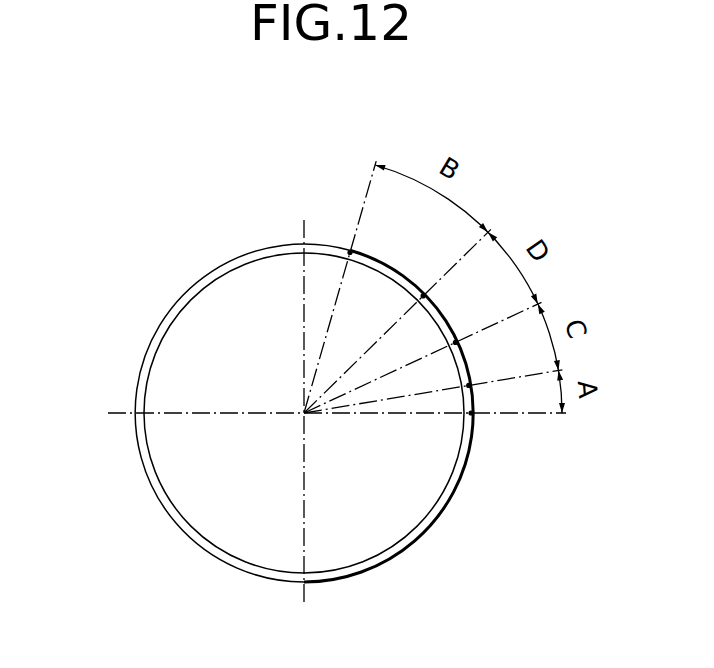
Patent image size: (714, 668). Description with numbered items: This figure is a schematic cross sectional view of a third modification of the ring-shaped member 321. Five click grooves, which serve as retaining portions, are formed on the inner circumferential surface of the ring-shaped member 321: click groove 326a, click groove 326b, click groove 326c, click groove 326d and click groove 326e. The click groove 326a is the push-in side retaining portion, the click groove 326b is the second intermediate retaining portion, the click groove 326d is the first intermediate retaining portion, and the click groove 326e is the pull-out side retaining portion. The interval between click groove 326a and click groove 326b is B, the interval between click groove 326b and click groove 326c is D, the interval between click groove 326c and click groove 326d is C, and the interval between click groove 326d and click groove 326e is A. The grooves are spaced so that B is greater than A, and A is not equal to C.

The ring-shaped member 321 is at (159, 320).
The click groove 326a is at (349, 251).
The click groove 326b is at (421, 295).
The click groove 326c is at (456, 341).
The click groove 326d is at (470, 384).
The click groove 326e is at (472, 414).